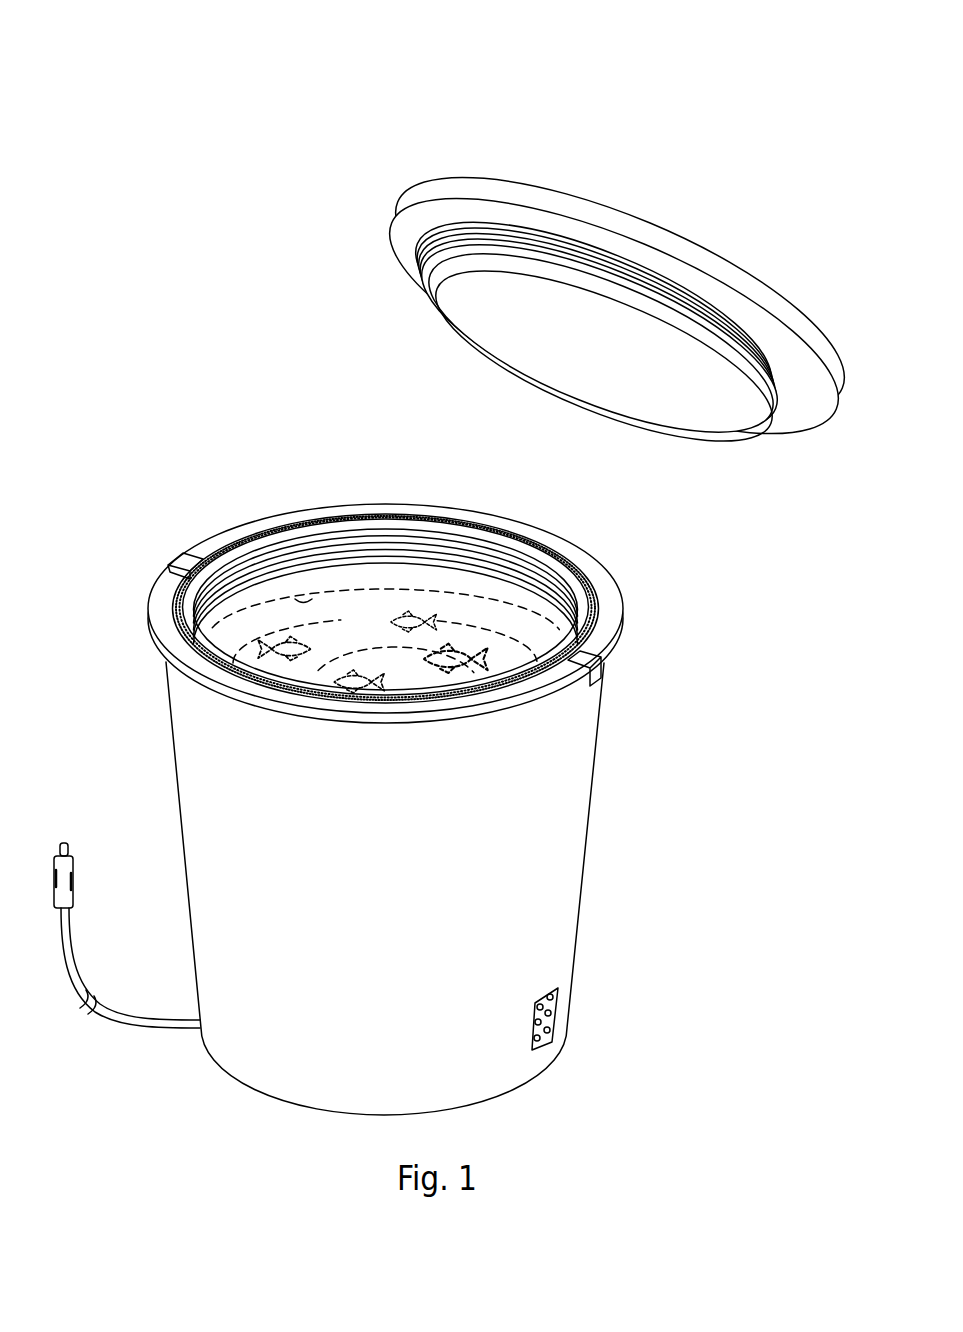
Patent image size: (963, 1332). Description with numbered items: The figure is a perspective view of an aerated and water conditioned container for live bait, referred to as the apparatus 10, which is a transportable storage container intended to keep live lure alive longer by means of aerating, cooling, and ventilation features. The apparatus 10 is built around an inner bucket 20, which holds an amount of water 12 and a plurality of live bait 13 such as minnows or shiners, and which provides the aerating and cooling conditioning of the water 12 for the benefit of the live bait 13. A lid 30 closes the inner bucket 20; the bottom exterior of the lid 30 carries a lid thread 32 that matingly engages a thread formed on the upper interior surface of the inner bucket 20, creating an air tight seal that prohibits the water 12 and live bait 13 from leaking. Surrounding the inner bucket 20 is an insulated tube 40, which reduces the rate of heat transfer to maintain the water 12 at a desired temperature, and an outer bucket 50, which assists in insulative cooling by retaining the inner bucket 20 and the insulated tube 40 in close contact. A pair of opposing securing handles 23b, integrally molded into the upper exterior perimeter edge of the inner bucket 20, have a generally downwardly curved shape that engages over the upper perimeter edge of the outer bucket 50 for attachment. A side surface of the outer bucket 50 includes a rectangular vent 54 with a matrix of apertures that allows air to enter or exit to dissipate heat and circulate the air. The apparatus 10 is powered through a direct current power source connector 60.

The apparatus 10 is at (118, 111).
The water 12 is at (303, 597).
The live bait 13 is at (450, 647).
The inner bucket 20 is at (375, 609).
The securing handles 23b is at (185, 558).
The lid 30 is at (614, 278).
The lid thread 32 is at (438, 288).
The insulated tube 40 is at (593, 595).
The outer bucket 50 is at (431, 888).
The vent 54 is at (555, 1020).
The direct current (DC) power source connector 60 is at (58, 865).